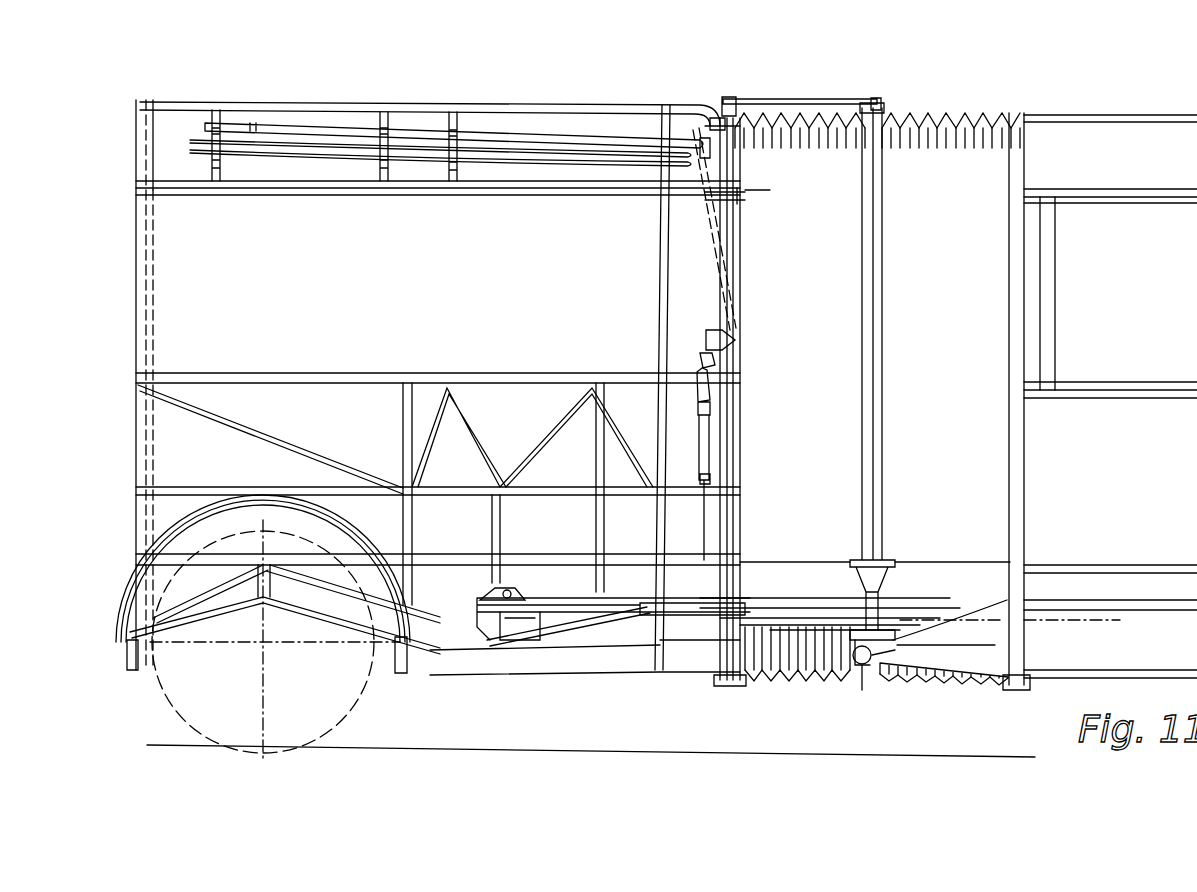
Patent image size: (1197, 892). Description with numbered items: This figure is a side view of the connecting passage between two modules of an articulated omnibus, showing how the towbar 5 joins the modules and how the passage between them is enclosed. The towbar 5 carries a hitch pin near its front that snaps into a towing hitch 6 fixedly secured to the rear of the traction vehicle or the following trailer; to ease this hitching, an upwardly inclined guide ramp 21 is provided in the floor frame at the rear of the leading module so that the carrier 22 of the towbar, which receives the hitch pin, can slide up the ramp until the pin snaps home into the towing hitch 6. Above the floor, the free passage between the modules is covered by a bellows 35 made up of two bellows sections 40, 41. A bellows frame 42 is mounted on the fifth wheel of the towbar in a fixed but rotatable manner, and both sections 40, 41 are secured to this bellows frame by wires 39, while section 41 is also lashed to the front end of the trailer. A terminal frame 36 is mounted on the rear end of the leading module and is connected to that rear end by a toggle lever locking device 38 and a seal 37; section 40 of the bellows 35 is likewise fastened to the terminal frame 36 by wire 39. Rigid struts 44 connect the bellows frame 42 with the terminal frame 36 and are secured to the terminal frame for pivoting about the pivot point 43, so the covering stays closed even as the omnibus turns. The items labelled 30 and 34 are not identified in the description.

The support strut 30 is at (710, 355).
The terminal frame 36 is at (735, 330).
The toggle lever locking device 38 is at (735, 205).
The seal 37 is at (720, 118).
The wire 39 is at (735, 117).
The rigid struts 44 is at (775, 99).
The bellows section 40 is at (815, 138).
The pivot point 43 is at (873, 103).
The bellows 35 is at (918, 183).
The bellows section 41 is at (947, 142).
The bellows frame 42 is at (870, 357).
The towing hitch 6 is at (498, 598).
The carrier 22 is at (532, 618).
The guide ramp 21 is at (613, 643).
The towbar 5 is at (672, 610).
The hydraulic actuator 34 is at (723, 592).